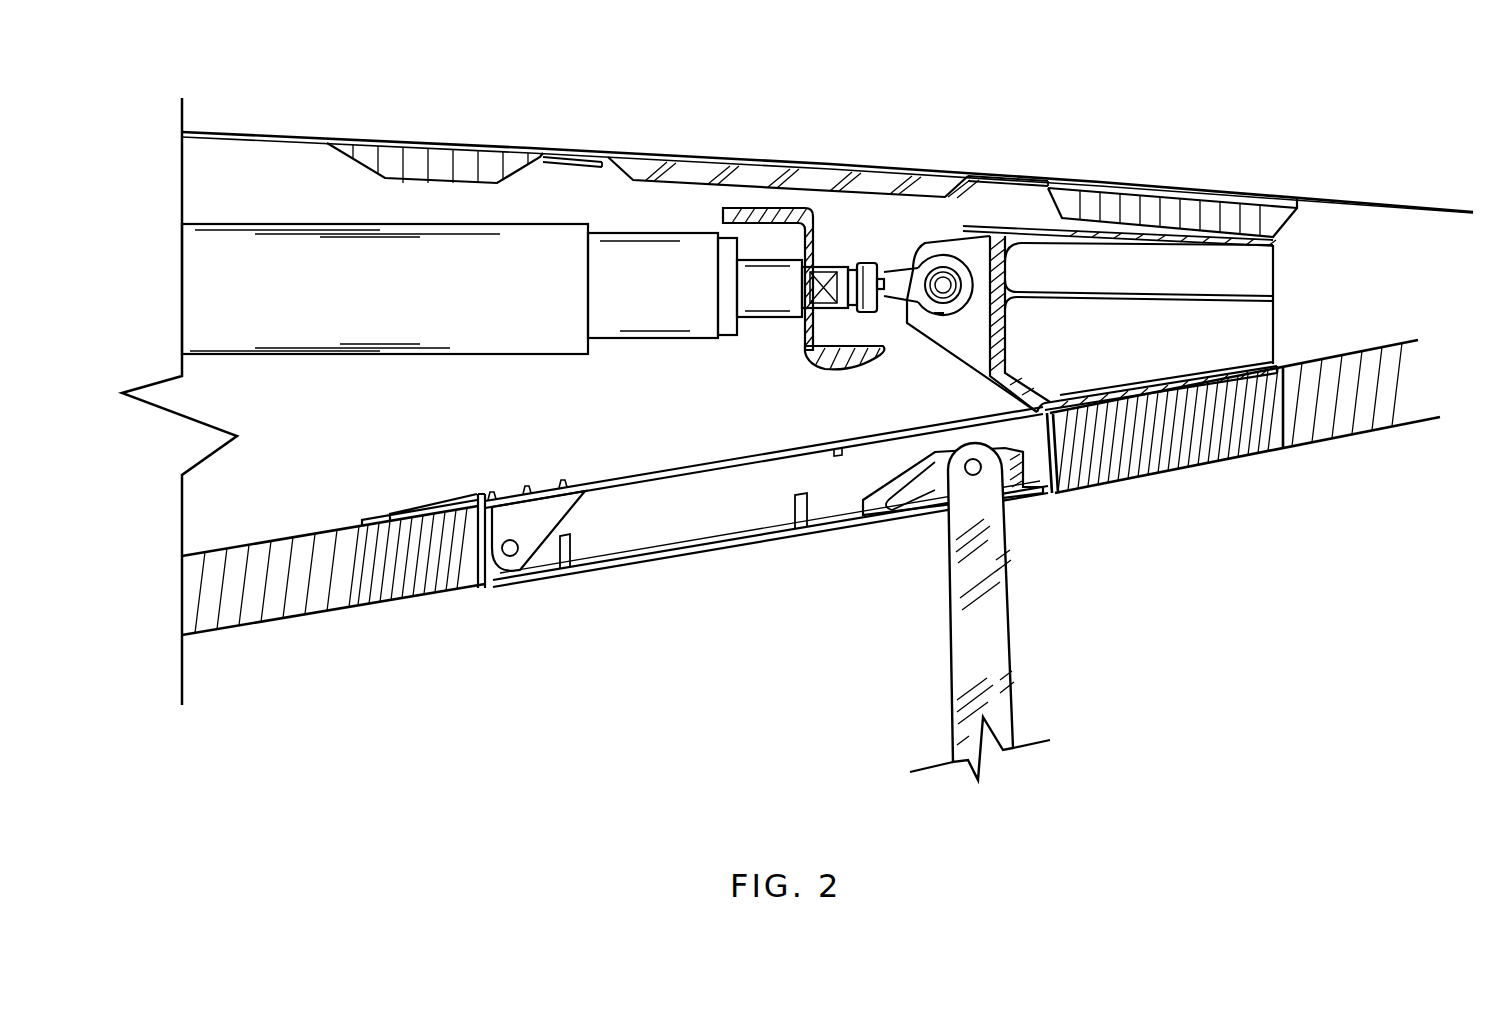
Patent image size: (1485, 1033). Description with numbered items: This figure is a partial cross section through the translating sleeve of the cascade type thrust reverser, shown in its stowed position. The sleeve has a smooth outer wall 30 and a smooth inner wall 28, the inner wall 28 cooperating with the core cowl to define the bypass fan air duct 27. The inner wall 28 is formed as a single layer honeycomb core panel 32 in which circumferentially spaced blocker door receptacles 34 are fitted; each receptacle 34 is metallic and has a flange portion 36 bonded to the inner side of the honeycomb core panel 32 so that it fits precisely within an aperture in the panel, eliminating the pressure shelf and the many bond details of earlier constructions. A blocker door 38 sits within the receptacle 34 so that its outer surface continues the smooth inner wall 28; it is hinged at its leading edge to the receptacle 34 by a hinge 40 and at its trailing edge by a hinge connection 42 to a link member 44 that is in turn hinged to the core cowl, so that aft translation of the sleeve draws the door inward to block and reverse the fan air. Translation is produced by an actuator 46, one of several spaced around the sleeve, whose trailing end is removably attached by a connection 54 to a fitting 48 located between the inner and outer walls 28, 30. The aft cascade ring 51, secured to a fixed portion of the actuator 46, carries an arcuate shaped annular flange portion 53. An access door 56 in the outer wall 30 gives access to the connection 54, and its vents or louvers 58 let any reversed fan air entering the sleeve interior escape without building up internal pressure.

The bypass fan air duct 27 is at (777, 620).
The inner wall 28 is at (330, 612).
The outer wall 30 is at (302, 133).
The honeycomb core panel 32 is at (233, 550).
The blocker door receptacle 34 is at (672, 476).
The flange portion 36 is at (435, 506).
The blocker door 38 is at (690, 557).
The hinge 40 is at (575, 511).
The hinge connection 42 is at (935, 454).
The link member 44 is at (1013, 628).
The actuator 46 is at (505, 356).
The fitting 48 is at (1277, 300).
The aft cascade ring 51 is at (802, 355).
The arcuate shaped annular flange portion 53 is at (843, 372).
The connection 54 is at (940, 318).
The access door 56 is at (648, 152).
The vents or louvers 58 is at (767, 168).